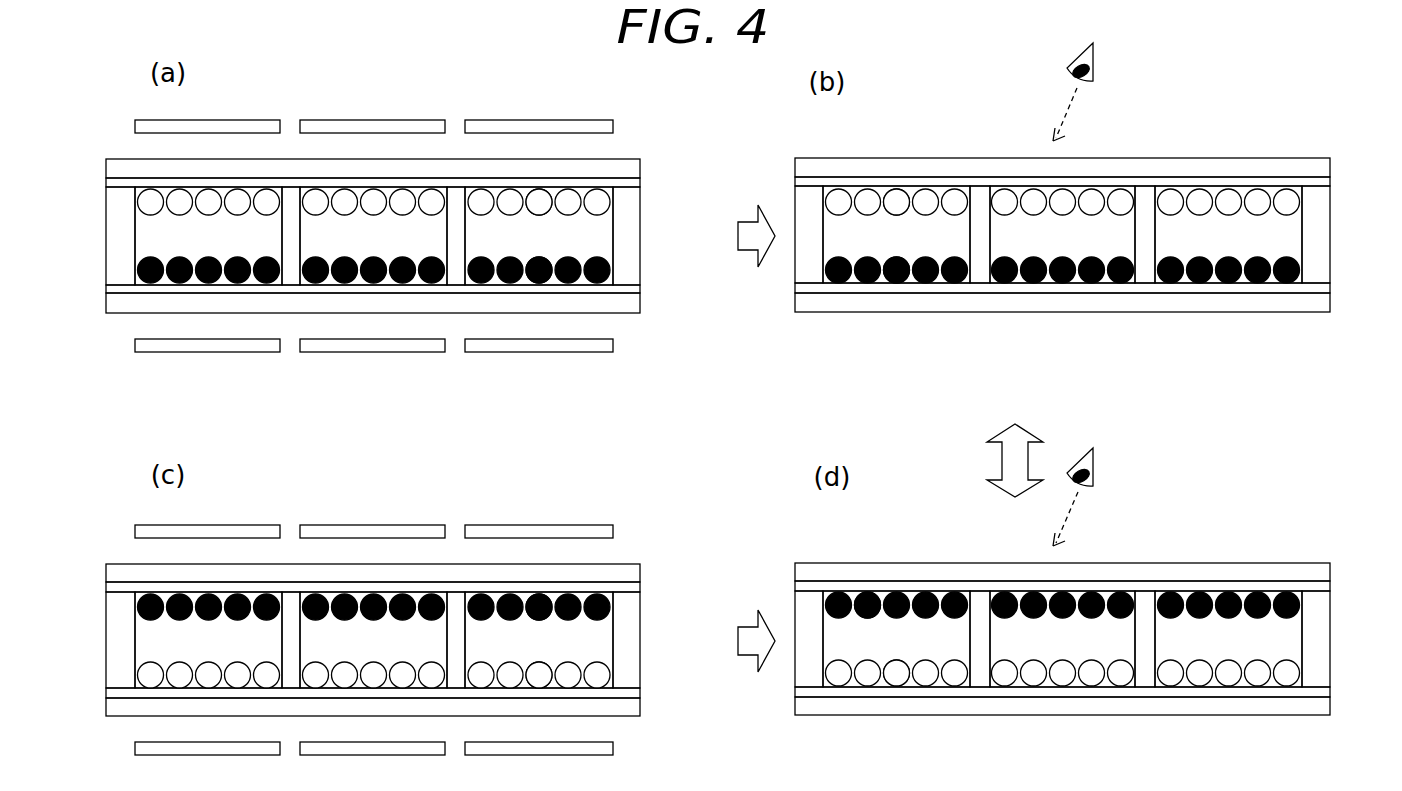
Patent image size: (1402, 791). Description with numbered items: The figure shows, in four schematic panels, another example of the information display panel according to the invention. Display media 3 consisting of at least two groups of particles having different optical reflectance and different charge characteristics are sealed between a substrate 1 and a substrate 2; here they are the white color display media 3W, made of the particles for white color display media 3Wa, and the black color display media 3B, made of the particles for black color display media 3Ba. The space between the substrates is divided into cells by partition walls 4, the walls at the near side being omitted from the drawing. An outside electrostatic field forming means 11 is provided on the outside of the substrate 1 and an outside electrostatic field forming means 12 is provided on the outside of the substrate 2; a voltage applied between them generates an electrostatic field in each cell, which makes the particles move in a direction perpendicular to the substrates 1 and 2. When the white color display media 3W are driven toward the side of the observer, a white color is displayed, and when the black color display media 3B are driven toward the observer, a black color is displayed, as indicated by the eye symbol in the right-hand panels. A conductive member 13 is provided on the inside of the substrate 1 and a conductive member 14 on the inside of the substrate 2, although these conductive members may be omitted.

The substrate 1 is at (292, 303).
The substrate 2 is at (290, 167).
The display media 3 is at (768, 437).
The white color display media 3W is at (763, 438).
The black color display media 3B is at (759, 437).
The particles for white color display media 3Wa is at (541, 196).
The particles for black color display media 3Ba is at (546, 284).
The partition walls 4 is at (122, 268).
The outside electrostatic field forming means 11 is at (373, 352).
The outside electrostatic field forming means 12 is at (370, 126).
The conductive member 13 is at (457, 290).
The conductive member 14 is at (455, 183).